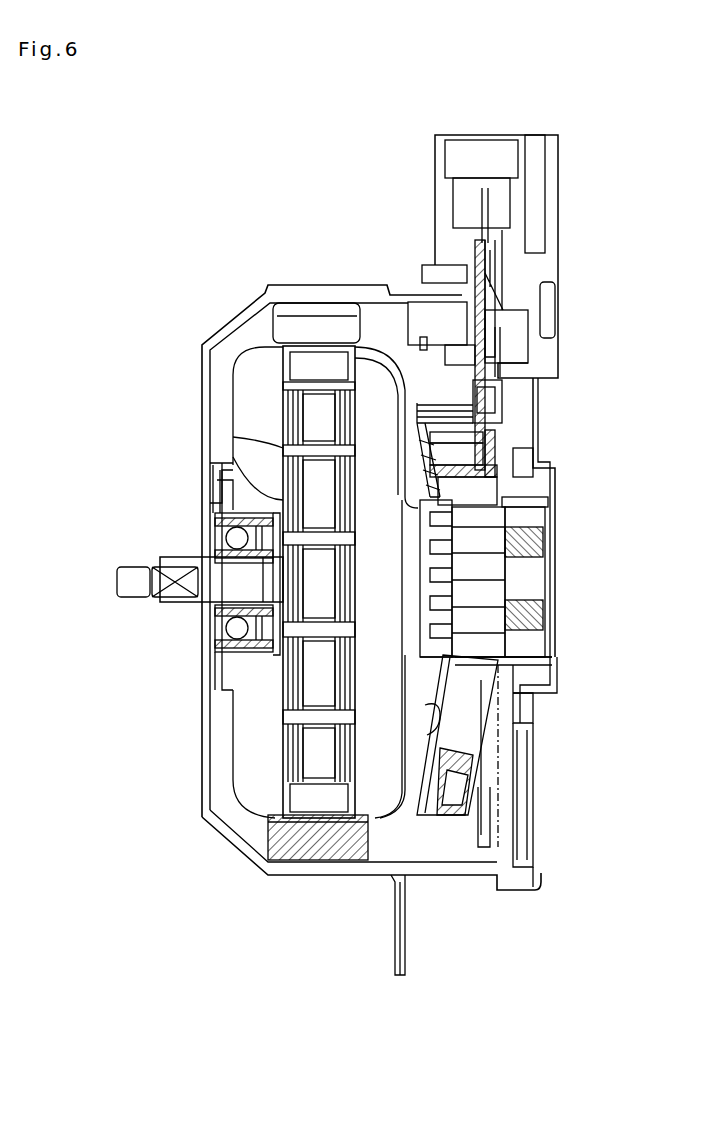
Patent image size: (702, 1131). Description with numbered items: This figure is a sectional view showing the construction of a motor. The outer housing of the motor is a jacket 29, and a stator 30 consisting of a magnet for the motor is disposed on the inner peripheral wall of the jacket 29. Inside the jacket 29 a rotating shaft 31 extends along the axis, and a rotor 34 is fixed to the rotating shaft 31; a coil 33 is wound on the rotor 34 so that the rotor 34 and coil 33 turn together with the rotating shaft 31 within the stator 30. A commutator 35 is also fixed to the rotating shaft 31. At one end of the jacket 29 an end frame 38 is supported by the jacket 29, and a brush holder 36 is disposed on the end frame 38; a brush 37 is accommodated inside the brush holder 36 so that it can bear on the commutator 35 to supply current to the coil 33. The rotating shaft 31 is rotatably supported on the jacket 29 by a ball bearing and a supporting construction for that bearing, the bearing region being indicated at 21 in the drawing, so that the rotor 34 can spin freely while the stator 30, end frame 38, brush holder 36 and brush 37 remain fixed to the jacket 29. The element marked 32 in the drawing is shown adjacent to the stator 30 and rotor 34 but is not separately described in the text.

The bearing 21 is at (213, 540).
The jacket 29 is at (222, 325).
The stator 30 is at (297, 857).
The rotating shaft 31 is at (135, 580).
The insulator 32 is at (283, 680).
The coil 33 is at (242, 793).
The rotor 34 is at (283, 712).
The commutator 35 is at (478, 592).
The brush holder 36 is at (417, 813).
The brush 37 is at (470, 690).
The end frame 38 is at (523, 807).